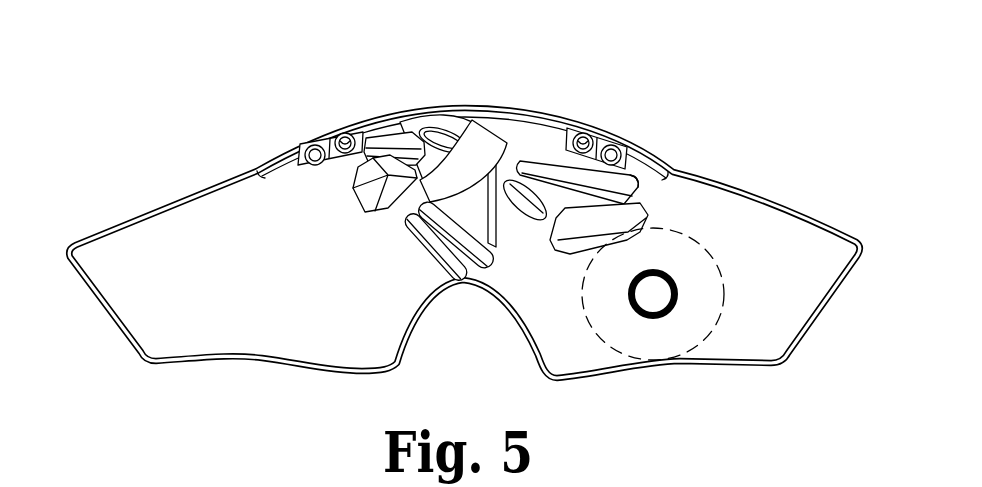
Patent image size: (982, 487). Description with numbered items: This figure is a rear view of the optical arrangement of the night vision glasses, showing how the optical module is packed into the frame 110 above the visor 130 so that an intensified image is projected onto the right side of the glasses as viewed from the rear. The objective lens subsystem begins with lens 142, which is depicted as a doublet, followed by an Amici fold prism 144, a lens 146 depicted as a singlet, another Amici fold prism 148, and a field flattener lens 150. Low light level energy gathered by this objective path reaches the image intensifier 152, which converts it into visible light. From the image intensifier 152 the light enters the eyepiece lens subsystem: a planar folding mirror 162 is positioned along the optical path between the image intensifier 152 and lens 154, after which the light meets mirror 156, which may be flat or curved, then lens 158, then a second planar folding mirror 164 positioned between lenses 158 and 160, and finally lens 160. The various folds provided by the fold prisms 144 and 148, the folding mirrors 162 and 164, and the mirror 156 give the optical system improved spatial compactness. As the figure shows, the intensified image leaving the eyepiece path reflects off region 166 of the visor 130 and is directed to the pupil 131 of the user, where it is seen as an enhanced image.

The frame 110 is at (300, 142).
The visor 130 is at (268, 280).
The pupil 131 is at (673, 300).
The lens 142 is at (366, 132).
The Amici fold prism 144 is at (356, 183).
The lens 146 is at (384, 145).
The Amici fold prism 148 is at (430, 125).
The field flattener lens 150 is at (484, 118).
The image intensifier 152 is at (497, 125).
The lens 154 is at (490, 263).
The mirror 156 is at (437, 265).
The lens 158 is at (520, 158).
The lens 160 is at (648, 216).
The flat mirror 162 is at (497, 237).
The flat mirror 164 is at (640, 182).
The region 166 is at (723, 273).